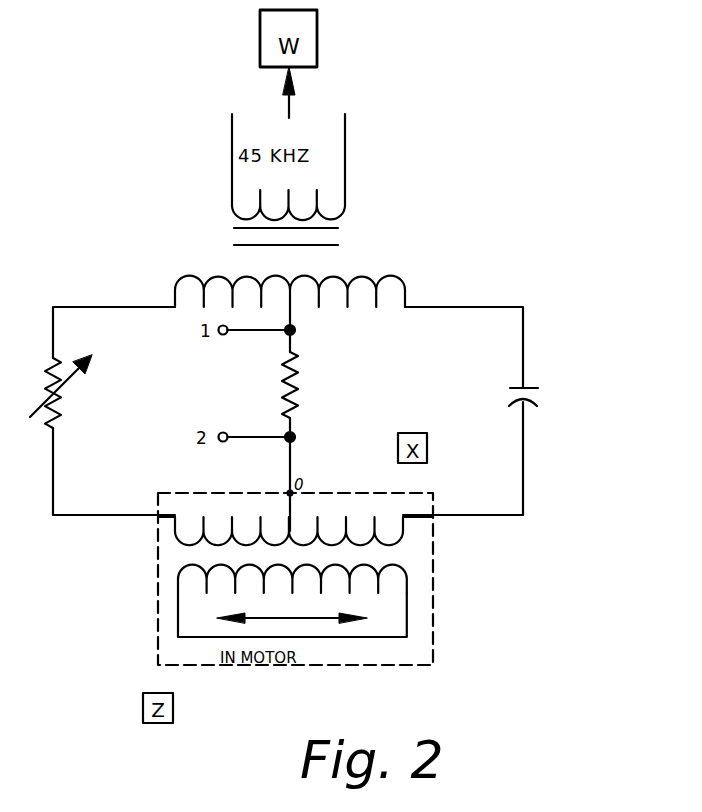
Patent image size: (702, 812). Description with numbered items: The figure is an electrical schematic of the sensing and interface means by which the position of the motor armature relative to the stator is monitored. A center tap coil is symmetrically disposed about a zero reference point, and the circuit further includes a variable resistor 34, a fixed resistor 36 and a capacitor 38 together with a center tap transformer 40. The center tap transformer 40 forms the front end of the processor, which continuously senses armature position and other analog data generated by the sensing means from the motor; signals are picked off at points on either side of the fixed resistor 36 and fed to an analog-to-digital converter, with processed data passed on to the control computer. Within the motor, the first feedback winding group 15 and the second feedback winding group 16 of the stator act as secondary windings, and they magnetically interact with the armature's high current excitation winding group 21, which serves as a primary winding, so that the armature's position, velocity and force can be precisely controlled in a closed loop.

The center tap transformer 40 is at (352, 274).
The fixed resistor 36 is at (300, 388).
The variable resistor 34 is at (64, 391).
The capacitor 38 is at (542, 389).
The first feedback winding group 15 is at (188, 548).
The second feedback winding group 16 is at (405, 535).
The second high current excitation winding group 21 is at (405, 568).